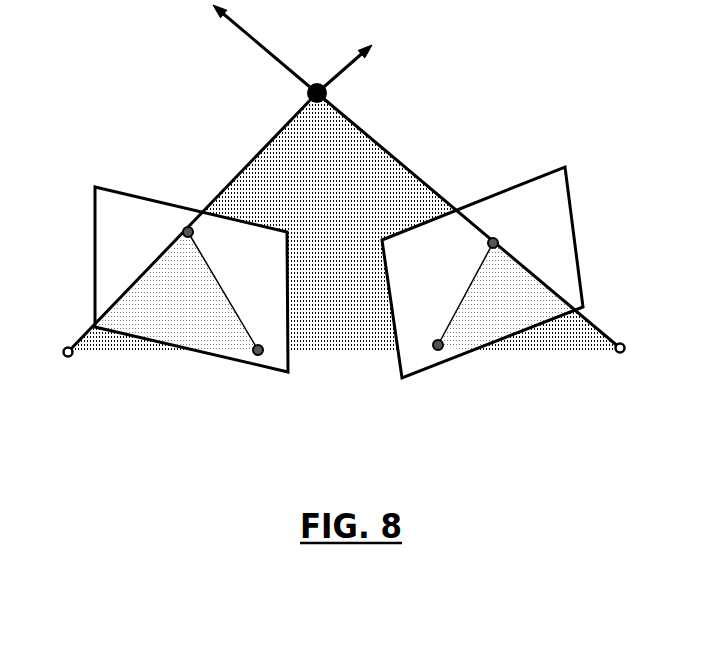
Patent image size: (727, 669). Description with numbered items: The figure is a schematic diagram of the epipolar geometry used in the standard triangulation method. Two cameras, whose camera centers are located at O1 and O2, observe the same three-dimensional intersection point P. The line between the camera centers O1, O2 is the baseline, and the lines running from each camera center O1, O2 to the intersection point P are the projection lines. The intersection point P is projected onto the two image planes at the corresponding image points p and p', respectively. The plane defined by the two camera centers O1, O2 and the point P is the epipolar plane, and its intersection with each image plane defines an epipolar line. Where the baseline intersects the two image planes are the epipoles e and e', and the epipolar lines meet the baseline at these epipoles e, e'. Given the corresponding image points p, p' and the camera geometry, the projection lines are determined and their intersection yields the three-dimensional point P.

The 3D point P is at (318, 67).
The camera center O1 is at (90, 375).
The camera center O2 is at (617, 372).
The projection p is at (162, 235).
The epipole e is at (260, 330).
The projection p' is at (514, 230).
The epipole e' is at (425, 327).